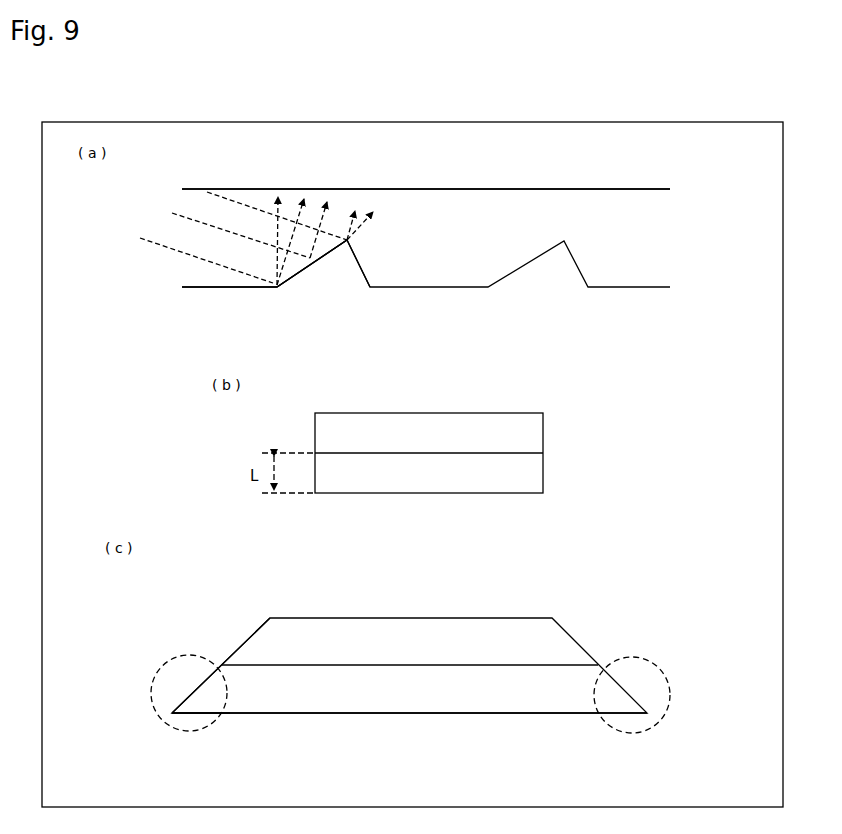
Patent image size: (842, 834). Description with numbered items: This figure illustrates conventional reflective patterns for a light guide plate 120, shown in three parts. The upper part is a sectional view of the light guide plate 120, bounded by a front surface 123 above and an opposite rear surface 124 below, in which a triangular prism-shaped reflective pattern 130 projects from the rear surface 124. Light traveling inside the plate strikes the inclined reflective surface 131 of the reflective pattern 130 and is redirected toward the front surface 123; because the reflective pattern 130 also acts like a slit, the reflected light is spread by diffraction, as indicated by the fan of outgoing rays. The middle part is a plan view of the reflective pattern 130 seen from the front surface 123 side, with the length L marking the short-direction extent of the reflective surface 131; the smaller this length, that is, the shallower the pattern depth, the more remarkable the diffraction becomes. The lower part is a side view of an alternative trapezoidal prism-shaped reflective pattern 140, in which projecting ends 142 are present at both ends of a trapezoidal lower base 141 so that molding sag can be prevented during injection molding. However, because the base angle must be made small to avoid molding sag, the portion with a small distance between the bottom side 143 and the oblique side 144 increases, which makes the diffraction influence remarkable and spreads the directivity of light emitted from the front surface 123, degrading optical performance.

The light guide plate 120 is at (505, 187).
The front surface 123 is at (650, 190).
The rear surface 124 is at (650, 290).
The reflective pattern 130 is at (298, 284).
The reflective surface 131 is at (328, 244).
The trapezoidal prism-shaped reflective pattern 140 is at (596, 601).
The trapezoidal lower base 141 is at (469, 717).
The projecting ends 142 is at (190, 732).
The bottom side 143 is at (202, 714).
The oblique side 144 is at (194, 691).